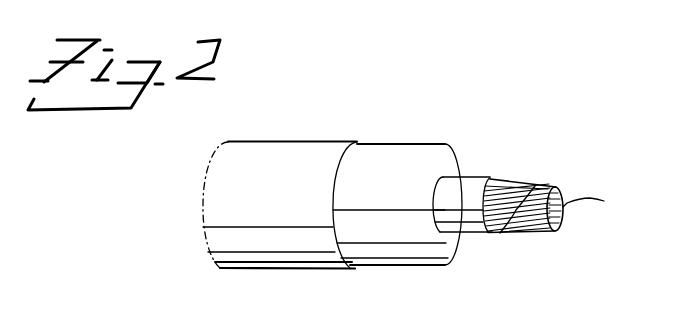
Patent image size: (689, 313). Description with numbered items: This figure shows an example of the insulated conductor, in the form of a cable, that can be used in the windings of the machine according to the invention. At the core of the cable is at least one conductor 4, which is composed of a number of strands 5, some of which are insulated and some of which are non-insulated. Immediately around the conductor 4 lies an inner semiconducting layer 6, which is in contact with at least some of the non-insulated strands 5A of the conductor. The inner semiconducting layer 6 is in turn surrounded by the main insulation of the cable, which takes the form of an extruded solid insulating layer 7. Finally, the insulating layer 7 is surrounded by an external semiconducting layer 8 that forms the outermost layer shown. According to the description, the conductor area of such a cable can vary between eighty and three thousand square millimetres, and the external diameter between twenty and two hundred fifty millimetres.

The conductor 4 is at (593, 201).
The strands 5 is at (527, 182).
The non-insulated strands 5A is at (502, 233).
The inner semiconducting layer 6 is at (480, 177).
The insulating layer 7 is at (402, 143).
The external semiconducting layer 8 is at (290, 141).